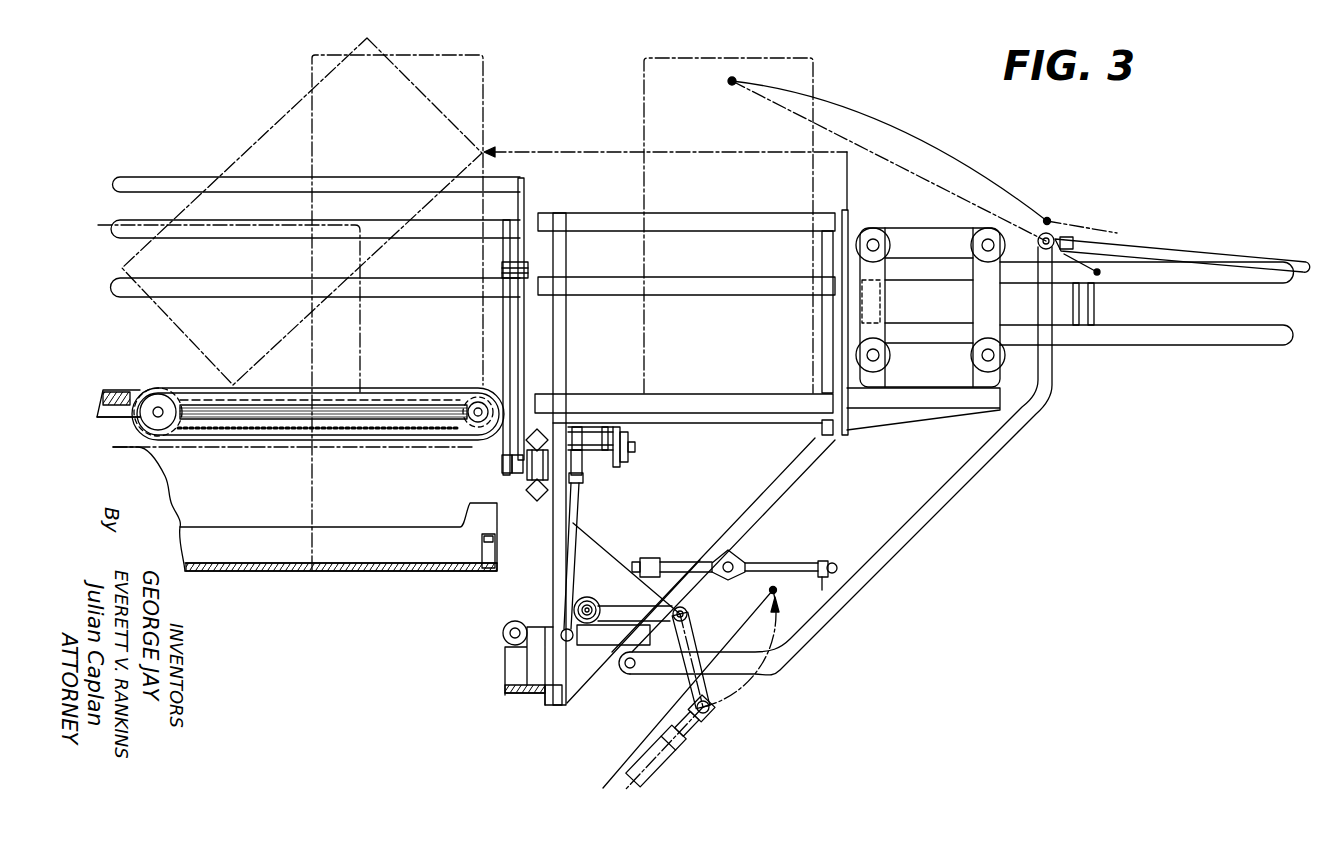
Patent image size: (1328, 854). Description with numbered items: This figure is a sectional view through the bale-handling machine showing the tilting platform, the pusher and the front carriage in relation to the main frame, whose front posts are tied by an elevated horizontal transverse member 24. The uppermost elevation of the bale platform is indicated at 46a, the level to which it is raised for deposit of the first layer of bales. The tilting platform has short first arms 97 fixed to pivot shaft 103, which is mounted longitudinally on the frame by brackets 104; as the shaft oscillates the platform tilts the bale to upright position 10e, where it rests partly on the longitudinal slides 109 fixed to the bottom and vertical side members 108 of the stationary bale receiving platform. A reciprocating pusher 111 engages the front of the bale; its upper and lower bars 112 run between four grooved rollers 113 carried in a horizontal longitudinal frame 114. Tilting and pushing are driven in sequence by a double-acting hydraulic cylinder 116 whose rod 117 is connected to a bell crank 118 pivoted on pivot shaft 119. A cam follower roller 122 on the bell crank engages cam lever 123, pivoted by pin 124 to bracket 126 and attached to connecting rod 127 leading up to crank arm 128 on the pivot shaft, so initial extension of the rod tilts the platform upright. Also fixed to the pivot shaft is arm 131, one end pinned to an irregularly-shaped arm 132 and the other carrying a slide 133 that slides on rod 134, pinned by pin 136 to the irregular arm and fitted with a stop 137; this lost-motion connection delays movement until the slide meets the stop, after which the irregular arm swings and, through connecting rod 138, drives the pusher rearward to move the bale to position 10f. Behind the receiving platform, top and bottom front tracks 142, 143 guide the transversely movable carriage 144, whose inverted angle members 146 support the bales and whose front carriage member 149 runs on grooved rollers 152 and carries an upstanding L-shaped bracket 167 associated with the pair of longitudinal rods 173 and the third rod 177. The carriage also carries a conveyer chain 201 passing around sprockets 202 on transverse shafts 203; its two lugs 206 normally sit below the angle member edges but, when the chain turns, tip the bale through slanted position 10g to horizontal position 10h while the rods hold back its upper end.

The bale upright position 10e is at (816, 68).
The bale pushed-off position 10f is at (488, 88).
The bale intermediate slanted position 10g is at (415, 89).
The bale horizontal position 10h is at (362, 360).
The horizontal transverse member 24 is at (504, 695).
The uppermost elevation of platform 46a is at (314, 570).
The short first arms 97 is at (577, 427).
The pivot shaft 103 is at (636, 447).
The brackets 104 is at (622, 467).
The vertical side members 108 is at (566, 333).
The longitudinal slides 109 is at (768, 232).
The pusher 111 is at (848, 212).
The upper and lower bars 112 is at (1217, 281).
The grooved rollers 113 is at (975, 230).
The horizontal longitudinal frame 114 is at (882, 307).
The double-acting hydraulic cylinder 116 is at (658, 771).
The rod 117 is at (698, 728).
The bell crank 118 is at (690, 696).
The pivot shaft 119 is at (688, 621).
The cam follower roller 122 is at (609, 594).
The cam lever 123 is at (566, 698).
The pin 124 is at (503, 628).
The bracket 126 is at (505, 672).
The connecting rod 127 is at (579, 504).
The crank arm 128 is at (584, 481).
The arm 131 is at (770, 592).
The irregularly-shaped arm 132 is at (981, 455).
The slide 133 is at (742, 557).
The rod 134 is at (802, 562).
The pin 136 is at (834, 562).
The stop 137 is at (653, 558).
The connecting rod 138 is at (1143, 250).
The top front track 142 is at (543, 418).
The bottom front track 143 is at (528, 500).
The transversely movable carriage 144 is at (107, 420).
The inverted angle members 146 is at (124, 391).
The front transverse horizontal carriage member 149 is at (492, 487).
The grooved rollers 152 is at (520, 480).
The upstanding L-shaped bracket 167 is at (524, 202).
The longitudinal horizontal rods 173 is at (379, 190).
The third horizontal longitudinal rod 177 is at (417, 299).
The conveyer chain 201 is at (373, 428).
The sprockets 202 is at (164, 404).
The transverse shafts 203 is at (178, 394).
The lugs 206 is at (517, 383).